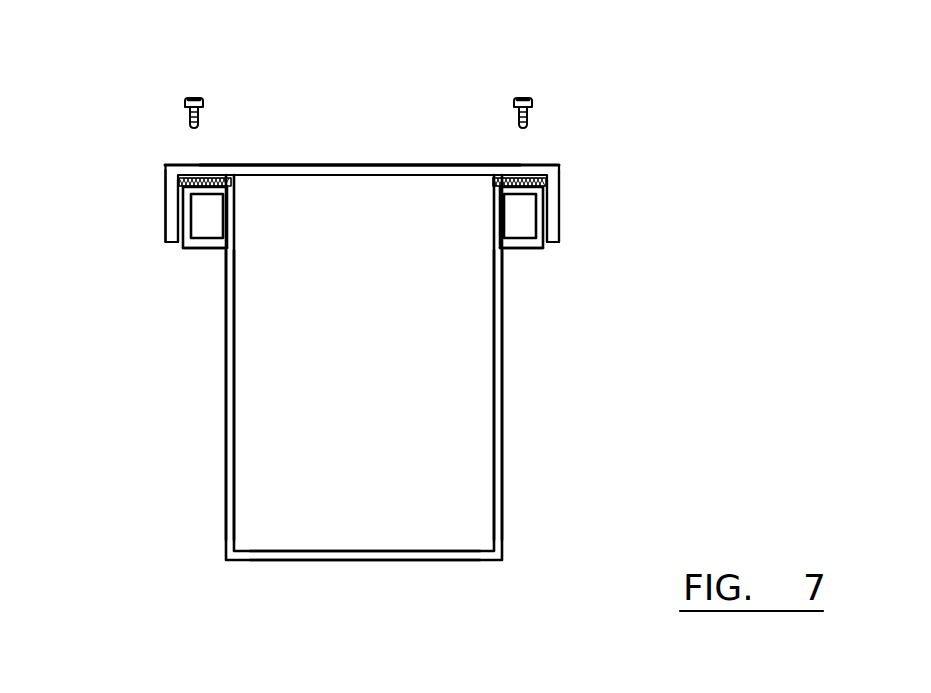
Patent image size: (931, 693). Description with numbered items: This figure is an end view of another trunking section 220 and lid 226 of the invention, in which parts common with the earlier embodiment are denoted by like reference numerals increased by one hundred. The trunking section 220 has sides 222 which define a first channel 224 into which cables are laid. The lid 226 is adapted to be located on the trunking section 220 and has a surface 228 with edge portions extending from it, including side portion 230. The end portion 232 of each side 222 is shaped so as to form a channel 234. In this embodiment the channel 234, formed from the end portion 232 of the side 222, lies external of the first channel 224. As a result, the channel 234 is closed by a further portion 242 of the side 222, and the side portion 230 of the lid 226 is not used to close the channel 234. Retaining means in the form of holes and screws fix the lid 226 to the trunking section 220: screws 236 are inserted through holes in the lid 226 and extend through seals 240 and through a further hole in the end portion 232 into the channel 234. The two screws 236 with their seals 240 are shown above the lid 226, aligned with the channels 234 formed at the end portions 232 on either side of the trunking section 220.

The trunking section 220 is at (428, 565).
The side 222 is at (226, 424).
The first channel 224 is at (303, 457).
The lid 226 is at (322, 161).
The surface 228 is at (420, 164).
The side portion 230 is at (172, 229).
The end portion 232 is at (242, 217).
The channel 234 is at (205, 210).
The screw 236 is at (187, 98).
The seal 240 is at (184, 165).
The further portion 242 is at (205, 243).